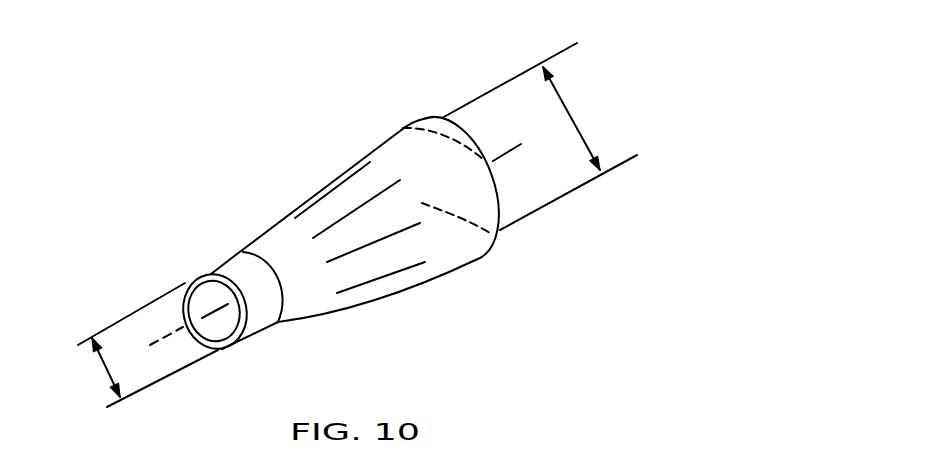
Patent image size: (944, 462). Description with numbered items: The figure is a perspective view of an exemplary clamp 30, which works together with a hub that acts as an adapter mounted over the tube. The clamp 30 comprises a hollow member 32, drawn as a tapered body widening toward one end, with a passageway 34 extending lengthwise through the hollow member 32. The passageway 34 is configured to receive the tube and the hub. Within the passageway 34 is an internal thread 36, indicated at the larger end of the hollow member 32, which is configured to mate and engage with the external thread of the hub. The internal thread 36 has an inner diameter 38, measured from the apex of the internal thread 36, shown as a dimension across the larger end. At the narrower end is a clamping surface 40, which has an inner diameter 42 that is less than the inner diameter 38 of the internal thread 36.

The clamp 30 is at (172, 165).
The hollow member 32 is at (340, 165).
The passageway 34 is at (505, 172).
The internal thread 36 is at (413, 126).
The inner diameter 38 is at (578, 121).
The clamping surface 40 is at (187, 298).
The inner diameter 42 is at (107, 377).